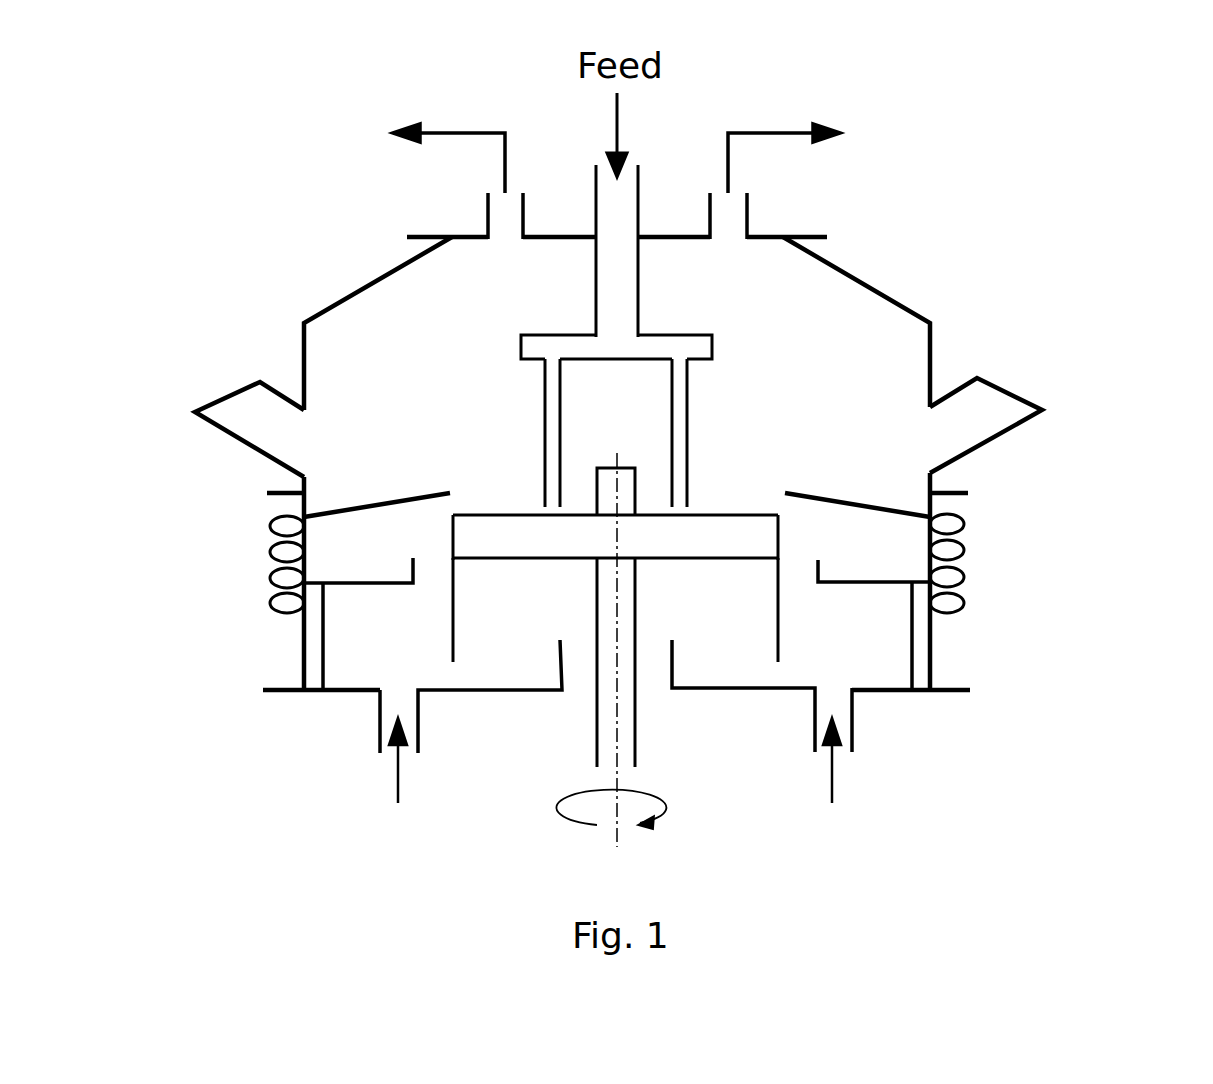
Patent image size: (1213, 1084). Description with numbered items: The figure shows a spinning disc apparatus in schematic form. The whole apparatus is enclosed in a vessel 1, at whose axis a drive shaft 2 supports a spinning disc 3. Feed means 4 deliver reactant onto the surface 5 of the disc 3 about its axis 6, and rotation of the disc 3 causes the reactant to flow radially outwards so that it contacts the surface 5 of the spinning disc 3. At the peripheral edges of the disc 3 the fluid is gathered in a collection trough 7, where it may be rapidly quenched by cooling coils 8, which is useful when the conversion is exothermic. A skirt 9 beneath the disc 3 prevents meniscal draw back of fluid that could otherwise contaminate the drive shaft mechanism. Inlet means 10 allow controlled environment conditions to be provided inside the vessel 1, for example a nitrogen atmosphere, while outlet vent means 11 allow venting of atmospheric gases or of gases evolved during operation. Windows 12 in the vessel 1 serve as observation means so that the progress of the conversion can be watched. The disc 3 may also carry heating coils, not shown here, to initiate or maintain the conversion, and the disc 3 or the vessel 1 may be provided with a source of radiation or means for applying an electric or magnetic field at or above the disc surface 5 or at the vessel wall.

The vessel 1 is at (350, 293).
The drive shaft 2 is at (603, 492).
The spinning disc 3 is at (703, 537).
The feed means 4 is at (632, 313).
The surface 5 is at (543, 515).
The axis 6 is at (613, 823).
The collection trough 7 is at (870, 583).
The cooling coils 8 is at (963, 550).
The skirt 9 is at (453, 617).
The inlet means 10 is at (422, 732).
The outlet vent means 11 is at (530, 203).
The windows 12 is at (213, 400).